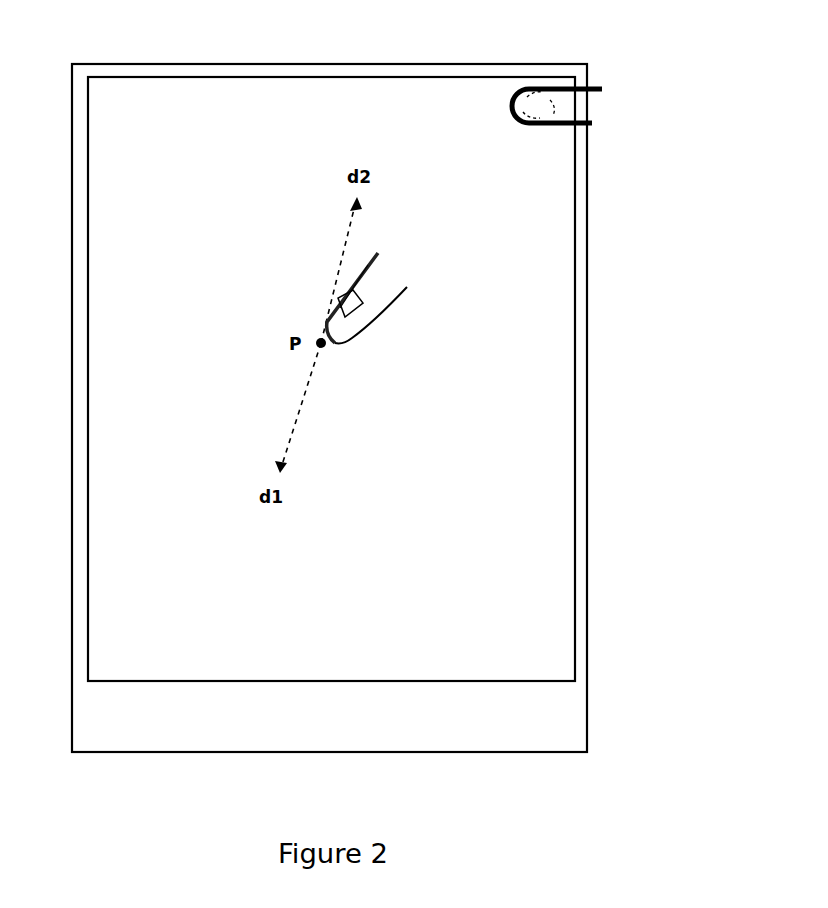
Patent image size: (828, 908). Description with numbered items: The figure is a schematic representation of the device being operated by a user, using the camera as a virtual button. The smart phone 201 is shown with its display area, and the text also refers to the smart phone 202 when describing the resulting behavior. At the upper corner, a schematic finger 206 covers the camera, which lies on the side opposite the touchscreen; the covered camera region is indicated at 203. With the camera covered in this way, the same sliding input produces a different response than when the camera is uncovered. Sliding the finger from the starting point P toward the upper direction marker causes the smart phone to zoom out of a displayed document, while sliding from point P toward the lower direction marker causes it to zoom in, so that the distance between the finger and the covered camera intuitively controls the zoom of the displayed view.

The smart phone 201 is at (588, 207).
The smart phone 202 is at (528, 435).
The stylus tip 203 is at (557, 108).
The schematic finger 206 is at (593, 129).